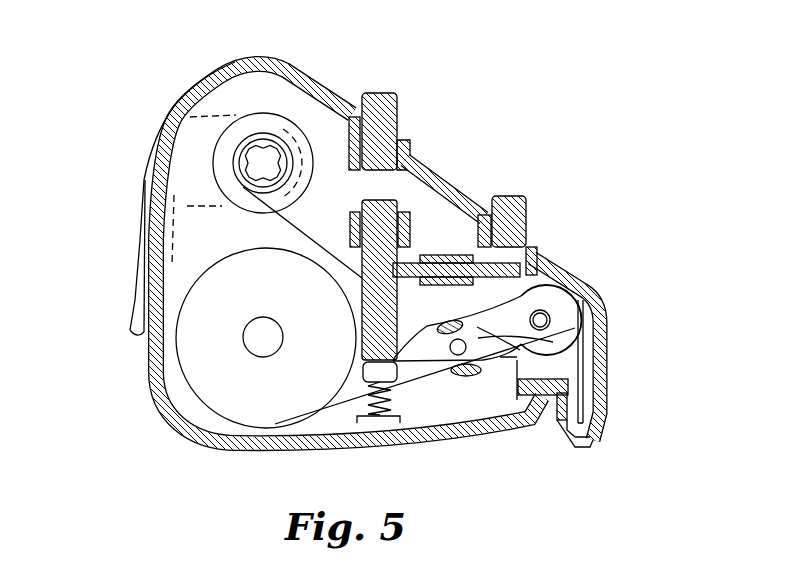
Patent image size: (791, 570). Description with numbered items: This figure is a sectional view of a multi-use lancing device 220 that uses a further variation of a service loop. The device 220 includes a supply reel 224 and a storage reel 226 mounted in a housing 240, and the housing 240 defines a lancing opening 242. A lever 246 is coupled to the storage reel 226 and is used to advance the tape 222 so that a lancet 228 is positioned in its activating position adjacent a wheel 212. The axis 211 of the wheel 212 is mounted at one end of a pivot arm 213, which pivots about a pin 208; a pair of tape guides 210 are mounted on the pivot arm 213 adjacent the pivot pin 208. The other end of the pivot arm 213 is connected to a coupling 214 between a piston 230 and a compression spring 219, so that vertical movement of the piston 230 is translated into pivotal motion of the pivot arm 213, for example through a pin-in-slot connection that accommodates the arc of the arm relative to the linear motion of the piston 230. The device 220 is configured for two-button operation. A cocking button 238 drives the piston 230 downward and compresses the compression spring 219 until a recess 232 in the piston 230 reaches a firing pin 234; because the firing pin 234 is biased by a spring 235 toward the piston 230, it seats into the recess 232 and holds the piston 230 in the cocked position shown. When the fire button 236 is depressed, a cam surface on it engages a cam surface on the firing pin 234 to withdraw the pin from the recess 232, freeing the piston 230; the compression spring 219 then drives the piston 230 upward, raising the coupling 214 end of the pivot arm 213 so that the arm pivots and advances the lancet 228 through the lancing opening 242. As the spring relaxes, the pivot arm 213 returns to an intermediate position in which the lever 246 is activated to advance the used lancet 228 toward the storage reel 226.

The multi-use lancing device 220 is at (580, 65).
The storage reel 226 is at (253, 142).
The cocking button 238 is at (375, 93).
The piston 230 is at (397, 200).
The firing pin 234 is at (447, 256).
The fire button 236 is at (510, 196).
The spring 235 is at (412, 263).
The axis 211 is at (543, 312).
The wheel 212 is at (567, 313).
The pivot arm 213 is at (585, 324).
The recess 232 is at (400, 293).
The tape guides 210 is at (447, 327).
The coupling 214 is at (350, 367).
The pin 208 is at (503, 352).
The compression spring 219 is at (391, 404).
The lancet 228 is at (605, 378).
The lever 246 is at (138, 250).
The housing 240 is at (150, 377).
The supply reel 224 is at (237, 393).
The tape 222 is at (527, 410).
The lancing opening 242 is at (585, 447).